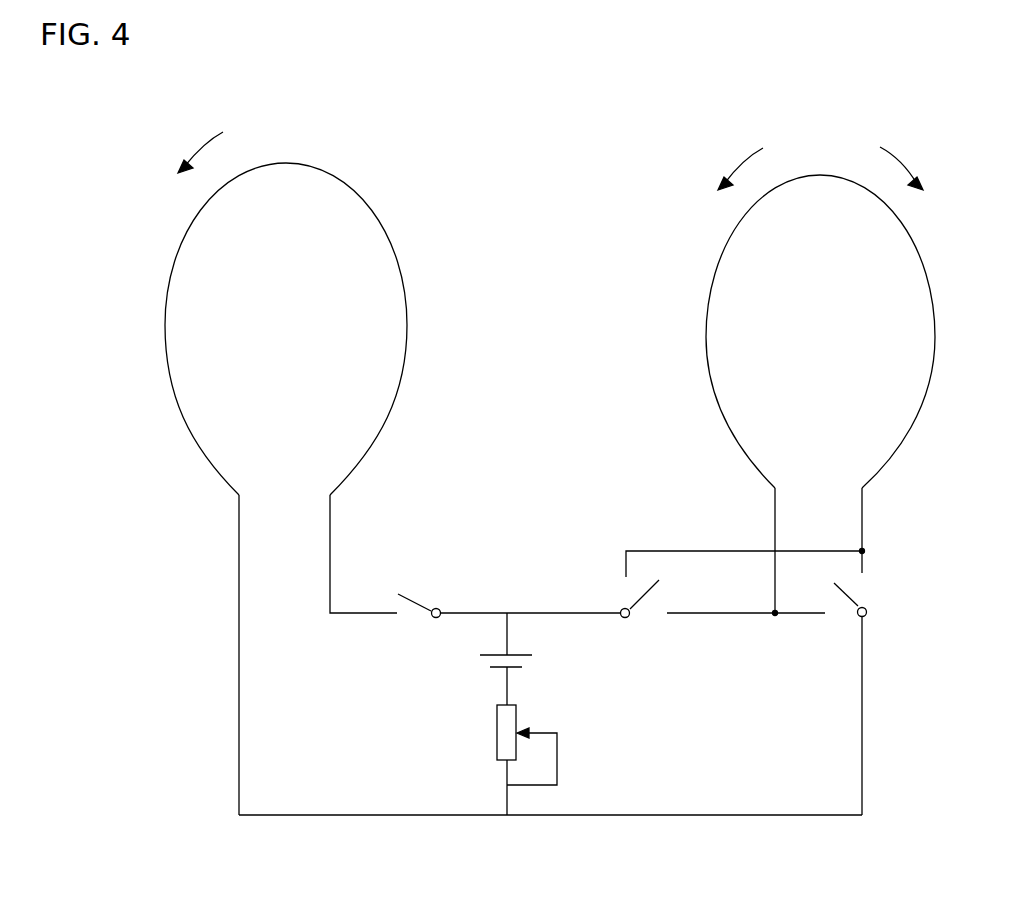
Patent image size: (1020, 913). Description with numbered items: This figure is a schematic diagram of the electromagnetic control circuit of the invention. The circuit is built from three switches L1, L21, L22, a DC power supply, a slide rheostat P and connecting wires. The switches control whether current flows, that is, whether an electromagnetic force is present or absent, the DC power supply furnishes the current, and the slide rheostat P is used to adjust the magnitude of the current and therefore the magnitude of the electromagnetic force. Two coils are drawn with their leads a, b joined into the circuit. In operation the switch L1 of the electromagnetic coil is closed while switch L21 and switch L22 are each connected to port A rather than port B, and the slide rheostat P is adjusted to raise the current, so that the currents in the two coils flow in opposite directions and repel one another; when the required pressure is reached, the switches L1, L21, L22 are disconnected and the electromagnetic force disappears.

The first lead of left coil a is at (222, 655).
The second lead of left coil b is at (363, 554).
The switch L1 is at (509, 594).
The switch L21 is at (728, 602).
The switch L22 is at (873, 651).
The slide rheostat P is at (507, 760).
The port A is at (775, 615).
The port B is at (707, 612).